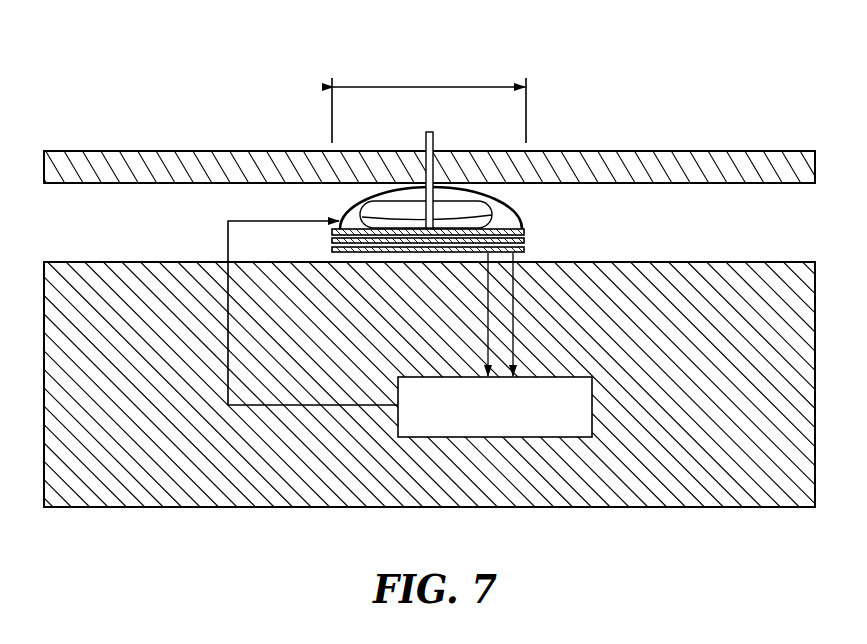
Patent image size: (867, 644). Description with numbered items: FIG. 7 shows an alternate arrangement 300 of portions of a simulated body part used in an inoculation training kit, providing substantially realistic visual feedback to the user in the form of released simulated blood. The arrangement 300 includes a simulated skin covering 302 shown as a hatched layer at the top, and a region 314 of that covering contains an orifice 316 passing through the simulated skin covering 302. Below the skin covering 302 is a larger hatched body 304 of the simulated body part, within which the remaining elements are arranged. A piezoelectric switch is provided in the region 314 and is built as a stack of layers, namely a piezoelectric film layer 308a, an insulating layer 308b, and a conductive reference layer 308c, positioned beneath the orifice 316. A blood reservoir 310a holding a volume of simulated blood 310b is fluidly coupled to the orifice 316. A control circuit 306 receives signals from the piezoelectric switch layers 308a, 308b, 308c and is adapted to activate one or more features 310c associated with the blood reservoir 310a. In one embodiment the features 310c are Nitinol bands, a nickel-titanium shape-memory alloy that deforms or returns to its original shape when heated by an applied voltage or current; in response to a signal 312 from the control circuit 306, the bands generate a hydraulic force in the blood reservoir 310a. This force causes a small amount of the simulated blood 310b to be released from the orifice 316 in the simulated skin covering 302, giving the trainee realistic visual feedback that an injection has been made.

The alternate arrangement 300 is at (674, 93).
The simulated skin covering 302 is at (723, 151).
The base substrate 304 is at (722, 262).
The control circuit 306 is at (515, 431).
The piezoelectric film layer 308a is at (525, 231).
The insulating layer 308b is at (525, 241).
The conductive reference layer 308c is at (525, 251).
The blood reservoir 310a is at (362, 203).
The simulated blood 310b is at (383, 223).
The features 310c is at (502, 200).
The signal 312 is at (228, 245).
The region 314 is at (425, 87).
The orifice 316 is at (426, 132).